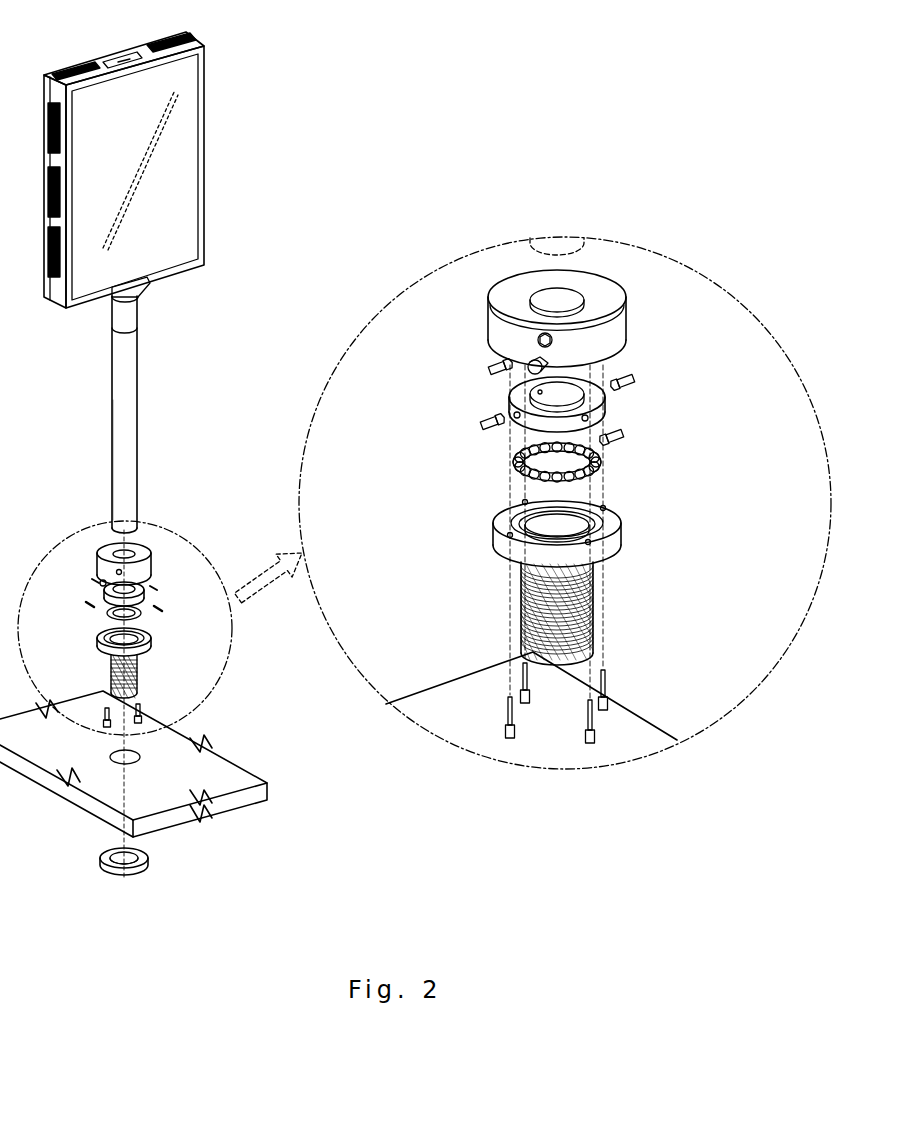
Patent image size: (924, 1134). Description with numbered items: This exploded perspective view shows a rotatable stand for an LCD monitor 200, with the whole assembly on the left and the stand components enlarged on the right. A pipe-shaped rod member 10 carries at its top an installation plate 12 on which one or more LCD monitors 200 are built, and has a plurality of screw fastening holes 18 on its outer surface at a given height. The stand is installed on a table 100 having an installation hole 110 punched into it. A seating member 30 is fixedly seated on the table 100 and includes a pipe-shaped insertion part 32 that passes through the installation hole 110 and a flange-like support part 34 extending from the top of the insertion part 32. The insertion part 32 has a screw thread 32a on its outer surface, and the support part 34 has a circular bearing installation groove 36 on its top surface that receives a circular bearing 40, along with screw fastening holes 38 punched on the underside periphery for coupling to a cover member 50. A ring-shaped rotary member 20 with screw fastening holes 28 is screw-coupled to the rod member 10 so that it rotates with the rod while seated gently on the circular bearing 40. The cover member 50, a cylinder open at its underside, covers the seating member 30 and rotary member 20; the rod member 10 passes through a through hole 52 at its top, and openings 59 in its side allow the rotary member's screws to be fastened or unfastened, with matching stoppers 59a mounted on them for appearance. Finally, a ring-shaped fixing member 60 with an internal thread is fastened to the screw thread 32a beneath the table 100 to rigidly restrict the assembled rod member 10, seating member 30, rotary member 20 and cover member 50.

The LCD monitor 200 is at (180, 172).
The installation plate 12 is at (147, 293).
The rod member 10 is at (132, 387).
The screw fastening holes 18 is at (114, 460).
The table 100 is at (230, 773).
The installation hole 110 is at (137, 751).
The fixing member 60 is at (108, 870).
The cover member 50 is at (488, 286).
The through hole 52 is at (577, 290).
The openings 59 is at (538, 343).
The stoppers 59a is at (528, 364).
The rotary member 20 is at (605, 413).
The screw fastening holes 28 is at (509, 434).
The circular bearing 40 is at (601, 463).
The seating member 30 is at (557, 615).
The insertion part 32 is at (521, 501).
The screw thread 32a is at (520, 604).
The support part 34 is at (621, 538).
The bearing installation groove 36 is at (607, 510).
The screw fastening holes 38 is at (507, 515).